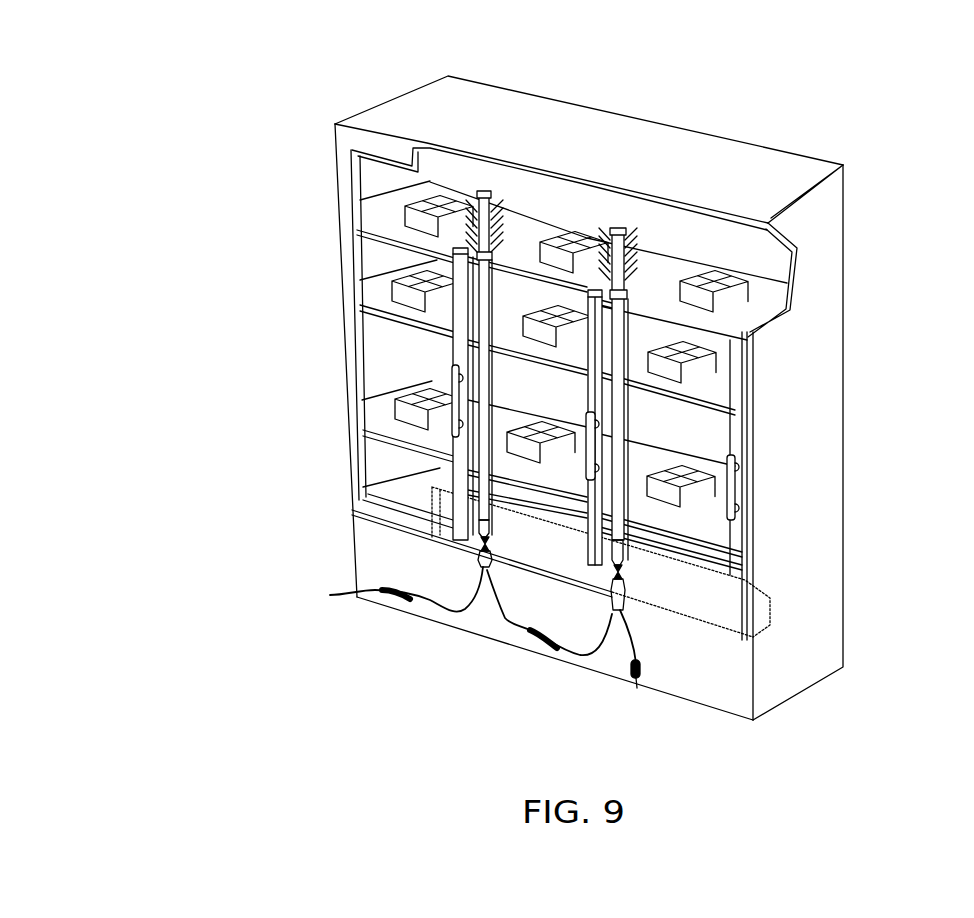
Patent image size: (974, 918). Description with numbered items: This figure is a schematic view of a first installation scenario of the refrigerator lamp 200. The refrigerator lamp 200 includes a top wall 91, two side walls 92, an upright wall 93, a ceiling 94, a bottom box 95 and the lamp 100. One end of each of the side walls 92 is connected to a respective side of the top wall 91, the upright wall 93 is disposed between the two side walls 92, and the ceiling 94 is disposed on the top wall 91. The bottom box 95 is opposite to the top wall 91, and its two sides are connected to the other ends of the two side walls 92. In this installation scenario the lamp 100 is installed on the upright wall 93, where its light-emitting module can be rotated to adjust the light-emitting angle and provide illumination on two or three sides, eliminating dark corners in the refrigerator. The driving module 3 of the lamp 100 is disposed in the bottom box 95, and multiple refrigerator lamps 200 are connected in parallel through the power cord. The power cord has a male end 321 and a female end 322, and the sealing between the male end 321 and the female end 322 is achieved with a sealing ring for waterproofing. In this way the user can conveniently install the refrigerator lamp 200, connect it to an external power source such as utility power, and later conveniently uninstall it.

The refrigerator lamp 200 is at (312, 317).
The top wall 91 is at (767, 170).
The side walls 92 is at (340, 265).
The upright wall 93 is at (440, 383).
The ceiling 94 is at (648, 225).
The bottom box 95 is at (523, 600).
The lamp 100 is at (484, 190).
The driving module 3 is at (443, 610).
The male end 321 is at (407, 597).
The female end 322 is at (633, 677).